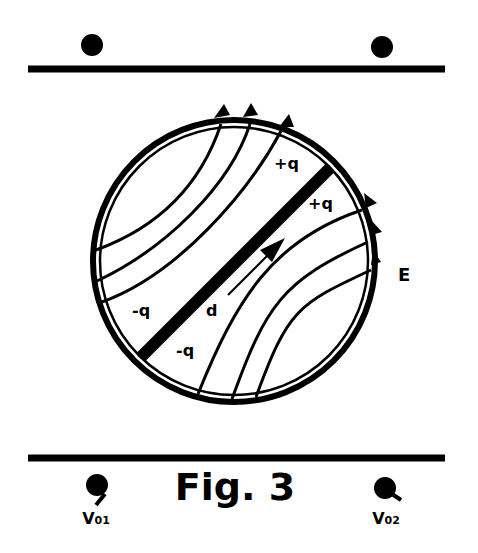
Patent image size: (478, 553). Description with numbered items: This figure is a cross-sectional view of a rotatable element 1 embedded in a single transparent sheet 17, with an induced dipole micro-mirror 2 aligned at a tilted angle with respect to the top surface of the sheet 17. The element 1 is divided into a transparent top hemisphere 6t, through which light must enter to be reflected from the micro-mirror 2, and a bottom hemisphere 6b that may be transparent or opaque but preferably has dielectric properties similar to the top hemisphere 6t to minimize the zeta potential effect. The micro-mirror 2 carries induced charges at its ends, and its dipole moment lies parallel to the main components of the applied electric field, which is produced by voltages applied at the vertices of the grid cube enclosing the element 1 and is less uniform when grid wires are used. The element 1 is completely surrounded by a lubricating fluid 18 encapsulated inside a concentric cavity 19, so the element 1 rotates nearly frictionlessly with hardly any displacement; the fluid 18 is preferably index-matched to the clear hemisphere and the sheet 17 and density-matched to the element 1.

The rotatable element 1 is at (97, 398).
The induced dipole micro-mirror 2 is at (284, 201).
The transparent top hemisphere 6t is at (152, 180).
The bottom hemisphere 6b is at (325, 337).
The transparent sheet 17 is at (202, 88).
The lubricating fluid 18 is at (303, 385).
The concentric cavity 19 is at (343, 162).